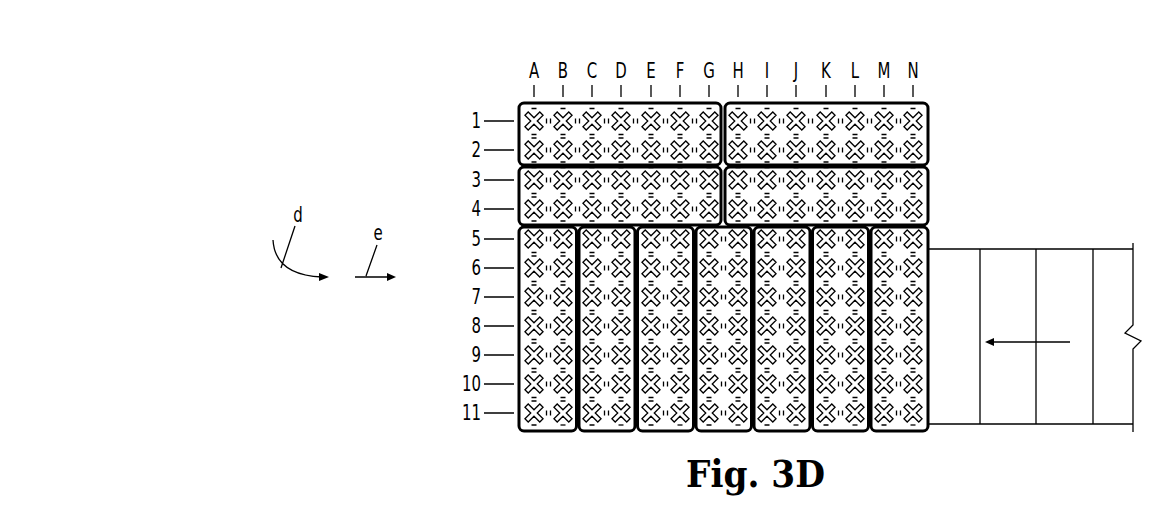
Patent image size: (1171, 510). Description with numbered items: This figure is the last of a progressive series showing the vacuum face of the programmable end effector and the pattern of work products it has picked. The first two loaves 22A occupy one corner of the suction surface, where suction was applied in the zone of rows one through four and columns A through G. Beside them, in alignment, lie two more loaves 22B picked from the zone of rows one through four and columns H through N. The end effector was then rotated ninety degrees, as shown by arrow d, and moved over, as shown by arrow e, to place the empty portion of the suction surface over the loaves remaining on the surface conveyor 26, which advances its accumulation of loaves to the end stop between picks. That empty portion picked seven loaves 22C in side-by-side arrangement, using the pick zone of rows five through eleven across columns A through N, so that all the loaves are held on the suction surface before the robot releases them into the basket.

The first loaves 22A is at (519, 178).
The second loaves 22B is at (930, 183).
The seven loaves 22C is at (703, 431).
The surface conveyor 26 is at (1067, 228).